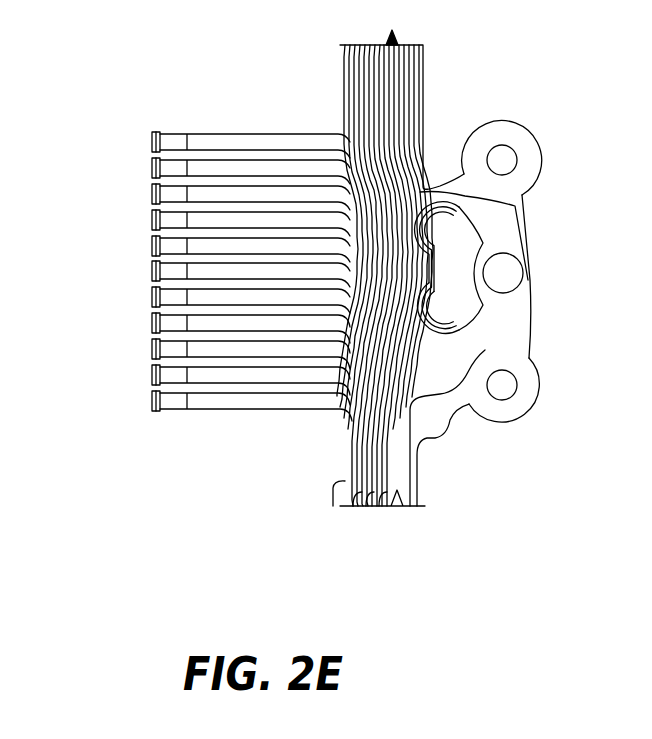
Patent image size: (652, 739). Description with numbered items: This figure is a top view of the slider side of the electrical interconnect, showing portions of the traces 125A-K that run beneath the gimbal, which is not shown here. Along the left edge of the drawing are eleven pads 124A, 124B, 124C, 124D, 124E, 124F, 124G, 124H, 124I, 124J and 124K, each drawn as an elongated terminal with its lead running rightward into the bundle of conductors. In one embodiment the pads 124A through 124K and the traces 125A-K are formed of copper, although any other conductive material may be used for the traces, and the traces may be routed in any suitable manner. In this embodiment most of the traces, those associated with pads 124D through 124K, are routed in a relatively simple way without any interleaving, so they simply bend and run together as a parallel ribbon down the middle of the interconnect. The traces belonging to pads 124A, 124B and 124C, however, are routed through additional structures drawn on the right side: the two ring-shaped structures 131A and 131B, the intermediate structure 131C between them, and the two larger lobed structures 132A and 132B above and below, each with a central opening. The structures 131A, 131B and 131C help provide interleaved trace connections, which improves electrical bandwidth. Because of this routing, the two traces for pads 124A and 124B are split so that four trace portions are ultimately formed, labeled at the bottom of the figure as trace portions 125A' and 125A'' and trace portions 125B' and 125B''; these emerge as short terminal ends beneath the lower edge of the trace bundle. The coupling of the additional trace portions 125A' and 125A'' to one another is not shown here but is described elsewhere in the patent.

The pad 124A is at (152, 406).
The pad 124B is at (152, 380).
The pad 124C is at (152, 354).
The pad 124D is at (152, 328).
The pad 124E is at (152, 302).
The pad 124F is at (152, 276).
The pad 124G is at (152, 251).
The pad 124H is at (152, 225).
The pad 124I is at (152, 199).
The pad 124J is at (152, 173).
The pad 124K is at (152, 147).
The traces 125A-K is at (243, 116).
The trace portion 125A' is at (335, 540).
The trace portion 125A'' is at (405, 523).
The trace portion 125B' is at (320, 515).
The trace portion 125B'' is at (380, 554).
The structure 131A is at (448, 235).
The structure 131B is at (447, 305).
The structure 131C is at (503, 273).
The structure 132A is at (528, 165).
The structure 132B is at (530, 380).